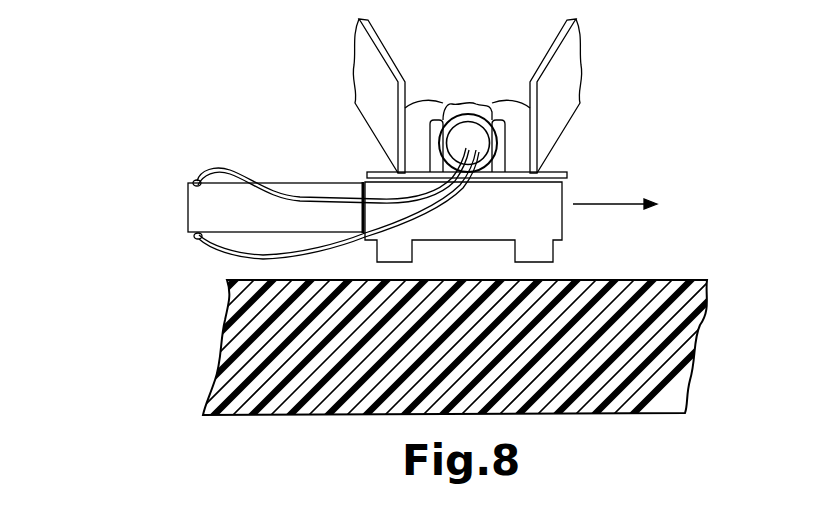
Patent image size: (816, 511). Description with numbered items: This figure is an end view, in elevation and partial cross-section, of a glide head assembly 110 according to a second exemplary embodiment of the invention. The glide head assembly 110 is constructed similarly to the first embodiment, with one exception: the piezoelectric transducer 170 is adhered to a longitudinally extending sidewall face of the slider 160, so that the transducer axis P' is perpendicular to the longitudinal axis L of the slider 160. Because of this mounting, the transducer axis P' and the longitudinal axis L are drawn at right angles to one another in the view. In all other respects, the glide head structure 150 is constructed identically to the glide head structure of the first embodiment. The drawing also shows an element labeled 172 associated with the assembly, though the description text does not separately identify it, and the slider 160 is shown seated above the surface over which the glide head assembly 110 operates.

The glide head assembly 110 is at (620, 162).
The glide head structure 150 is at (238, 155).
The slider 160 is at (542, 213).
The piezoelectric transducer 170 is at (308, 190).
The optical fiber 172 is at (330, 190).
The longitudinal axis L is at (466, 140).
The transducer axis P' is at (627, 204).